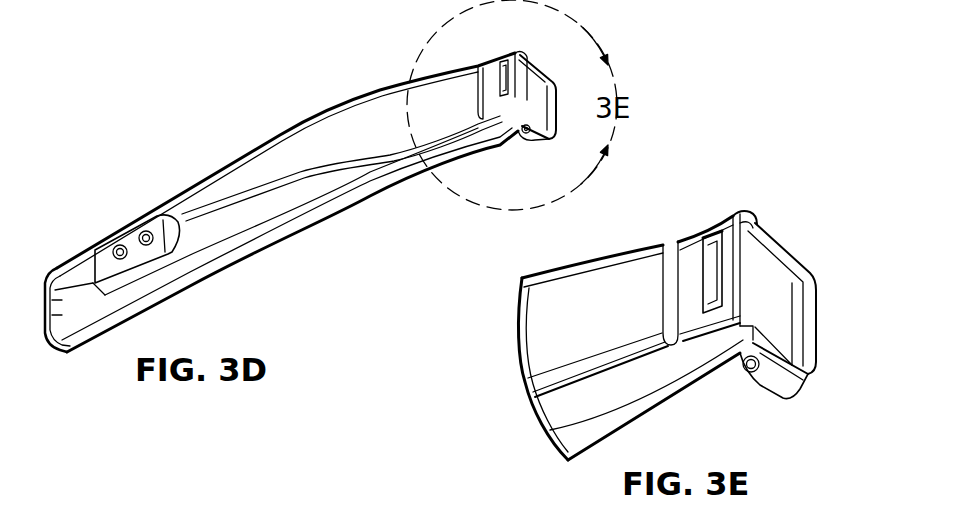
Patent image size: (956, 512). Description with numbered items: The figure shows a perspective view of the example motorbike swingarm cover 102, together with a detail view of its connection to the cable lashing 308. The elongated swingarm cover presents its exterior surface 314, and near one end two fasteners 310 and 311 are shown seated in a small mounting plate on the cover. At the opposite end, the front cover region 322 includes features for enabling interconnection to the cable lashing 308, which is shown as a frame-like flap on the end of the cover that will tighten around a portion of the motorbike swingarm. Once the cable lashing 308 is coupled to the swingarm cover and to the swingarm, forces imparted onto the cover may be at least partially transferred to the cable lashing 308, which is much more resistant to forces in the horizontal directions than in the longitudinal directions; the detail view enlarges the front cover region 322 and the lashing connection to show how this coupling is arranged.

In FIG. 3D, the motorbike swingarm cover 102 is at (372, 66).
In FIG. 3D, the exterior surface 314 is at (343, 130).
In FIG. 3D, the fastener 311 is at (203, 162).
In FIG. 3D, the fastener 310 is at (115, 241).
In FIG. 3E, the front cover region 322 is at (718, 192).
In FIG. 3E, the cable lashing 308 is at (790, 260).